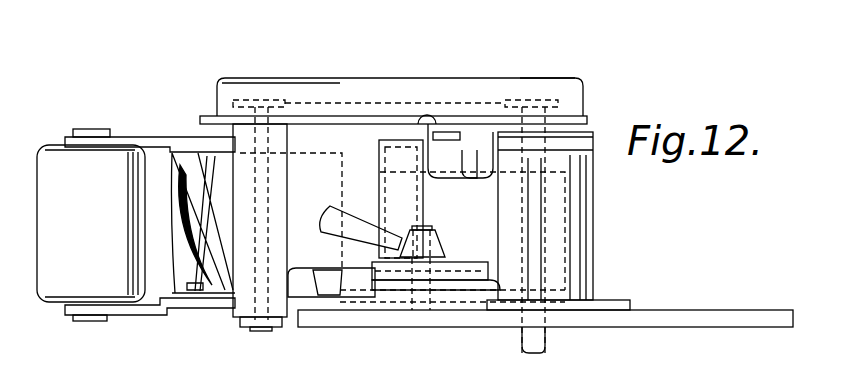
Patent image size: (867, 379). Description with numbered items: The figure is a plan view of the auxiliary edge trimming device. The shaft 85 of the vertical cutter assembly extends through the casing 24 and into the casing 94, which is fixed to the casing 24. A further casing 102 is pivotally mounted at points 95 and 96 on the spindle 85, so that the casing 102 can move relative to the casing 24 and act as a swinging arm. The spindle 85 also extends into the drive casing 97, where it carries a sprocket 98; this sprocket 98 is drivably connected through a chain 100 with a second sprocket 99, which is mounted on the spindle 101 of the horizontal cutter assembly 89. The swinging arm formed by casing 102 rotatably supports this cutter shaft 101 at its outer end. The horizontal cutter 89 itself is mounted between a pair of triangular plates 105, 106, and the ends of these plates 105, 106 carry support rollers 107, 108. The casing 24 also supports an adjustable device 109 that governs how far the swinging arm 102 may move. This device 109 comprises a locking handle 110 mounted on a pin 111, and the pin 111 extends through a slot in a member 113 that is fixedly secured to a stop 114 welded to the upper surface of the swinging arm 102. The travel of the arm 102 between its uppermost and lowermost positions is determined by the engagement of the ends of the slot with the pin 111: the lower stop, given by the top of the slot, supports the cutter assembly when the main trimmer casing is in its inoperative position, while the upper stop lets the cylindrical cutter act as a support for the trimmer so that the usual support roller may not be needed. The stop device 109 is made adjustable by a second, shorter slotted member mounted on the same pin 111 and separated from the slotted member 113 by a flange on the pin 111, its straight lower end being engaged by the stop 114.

The casing 24 is at (733, 310).
The shaft 85 is at (523, 339).
The horizontal cutter assembly 89 is at (180, 157).
The casing 94 is at (572, 210).
The pivot mounting 95 is at (560, 172).
The pivot mounting 96 is at (560, 283).
The drive casing 97 is at (532, 78).
The sprocket 98 is at (553, 99).
The sprocket 99 is at (273, 99).
The chain 100 is at (352, 100).
The spindle 101 is at (272, 213).
The casing 102 is at (250, 290).
The triangular plate 105 is at (172, 315).
The triangular plate 106 is at (132, 137).
The support roller 107 is at (57, 168).
The support roller 108 is at (478, 160).
The adjustable device 109 is at (360, 257).
The locking handle 110 is at (335, 210).
The pin 111 is at (438, 232).
The slotted member 113 is at (452, 264).
The stop 114 is at (395, 150).